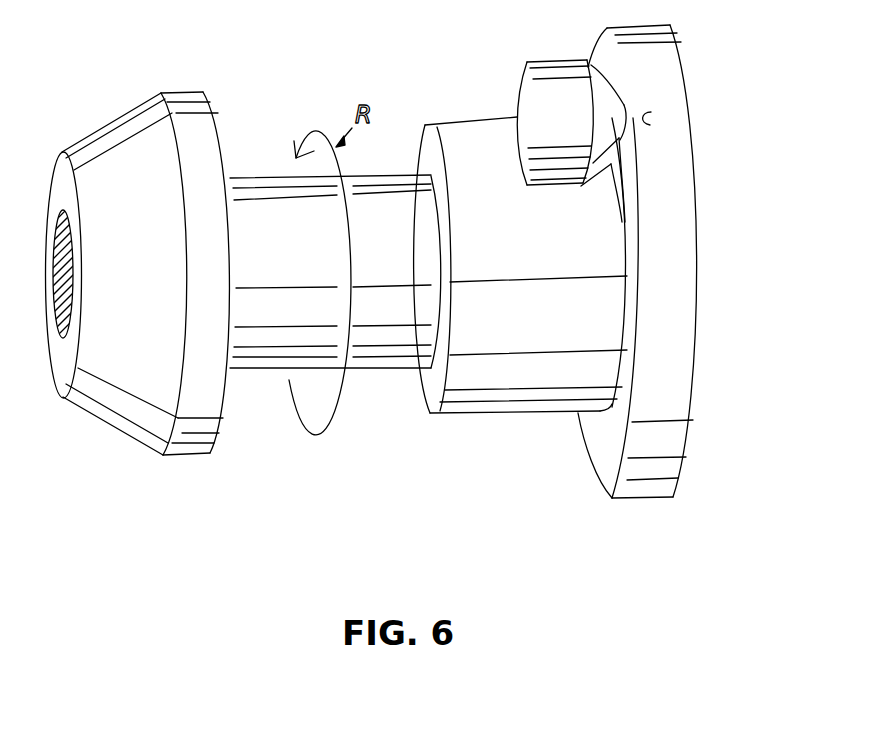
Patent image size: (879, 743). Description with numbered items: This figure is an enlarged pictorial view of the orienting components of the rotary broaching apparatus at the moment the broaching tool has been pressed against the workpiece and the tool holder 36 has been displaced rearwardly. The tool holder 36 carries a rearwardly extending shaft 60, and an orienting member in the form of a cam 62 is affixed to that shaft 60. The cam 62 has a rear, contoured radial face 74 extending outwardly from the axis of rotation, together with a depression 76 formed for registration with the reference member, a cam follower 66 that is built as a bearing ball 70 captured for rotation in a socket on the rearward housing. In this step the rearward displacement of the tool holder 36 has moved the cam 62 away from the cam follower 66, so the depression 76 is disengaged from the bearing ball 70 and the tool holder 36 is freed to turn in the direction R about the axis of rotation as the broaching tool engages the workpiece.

The tool holder 36 is at (131, 420).
The shaft 60 is at (403, 353).
The cam 62 is at (683, 341).
The cam follower 66 is at (538, 64).
The bearing ball 70 is at (623, 107).
The contoured radial face 74 is at (600, 439).
The depression 76 is at (645, 122).